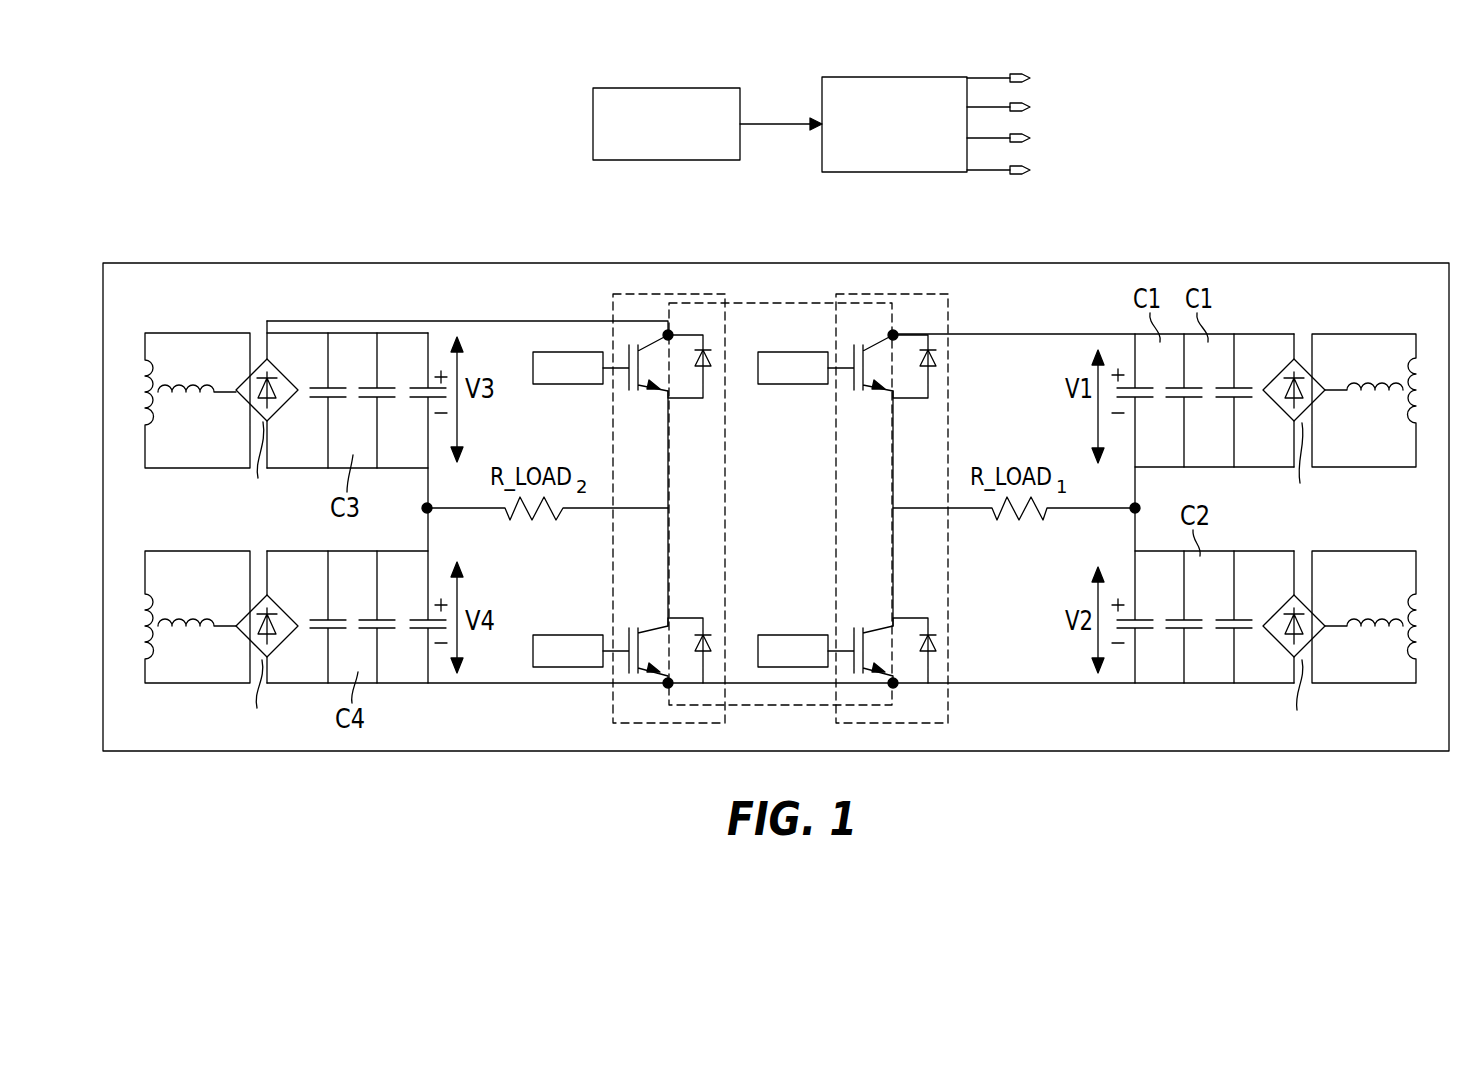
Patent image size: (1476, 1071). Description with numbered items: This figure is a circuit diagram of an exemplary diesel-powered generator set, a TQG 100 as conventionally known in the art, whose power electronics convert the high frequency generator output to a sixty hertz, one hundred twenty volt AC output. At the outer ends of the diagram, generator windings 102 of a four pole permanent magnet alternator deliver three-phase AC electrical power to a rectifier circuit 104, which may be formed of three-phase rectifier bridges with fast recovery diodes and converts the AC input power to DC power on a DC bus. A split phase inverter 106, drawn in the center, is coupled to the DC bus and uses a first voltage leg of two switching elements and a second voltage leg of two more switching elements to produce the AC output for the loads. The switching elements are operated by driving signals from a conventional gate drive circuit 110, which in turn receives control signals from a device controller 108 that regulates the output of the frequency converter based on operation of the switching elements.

The TQG 100 is at (174, 160).
The generator windings 102 is at (160, 313).
The rectifier circuit 104 is at (260, 330).
The split phase inverter 106 is at (640, 294).
The device controller 108 is at (637, 88).
The gate drive circuit 110 is at (852, 77).